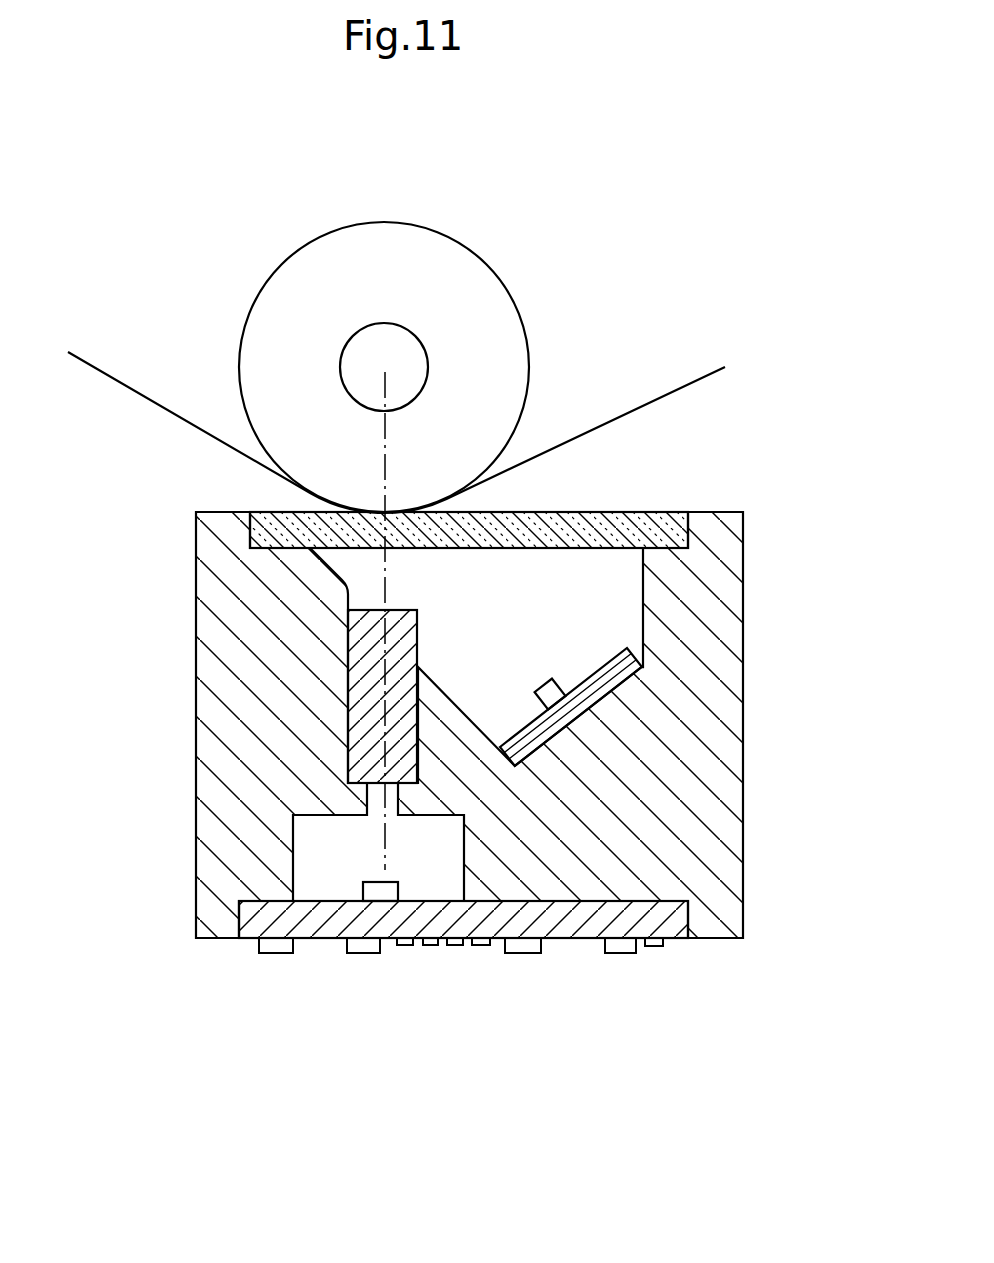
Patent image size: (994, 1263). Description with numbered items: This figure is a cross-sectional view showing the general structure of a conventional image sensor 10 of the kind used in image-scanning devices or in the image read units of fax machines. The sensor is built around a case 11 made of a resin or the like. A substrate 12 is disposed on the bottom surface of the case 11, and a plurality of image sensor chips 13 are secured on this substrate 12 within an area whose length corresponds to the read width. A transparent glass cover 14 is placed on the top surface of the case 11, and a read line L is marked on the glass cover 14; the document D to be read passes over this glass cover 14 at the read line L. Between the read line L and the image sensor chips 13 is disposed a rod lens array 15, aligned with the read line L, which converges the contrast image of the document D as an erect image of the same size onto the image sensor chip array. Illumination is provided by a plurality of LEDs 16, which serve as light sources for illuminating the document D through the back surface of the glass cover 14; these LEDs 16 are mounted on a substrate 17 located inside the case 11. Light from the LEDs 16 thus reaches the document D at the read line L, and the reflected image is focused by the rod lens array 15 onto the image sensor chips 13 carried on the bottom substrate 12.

The image sensor 10 is at (475, 739).
The case 11 is at (743, 627).
The substrate 12 is at (320, 937).
The image sensor chips 13 is at (393, 882).
The transparent glass cover 14 is at (615, 513).
The rod lens array 15 is at (368, 646).
The LEDs 16 is at (542, 680).
The substrate 17 is at (517, 732).
The document D is at (693, 388).
The read line L is at (386, 463).